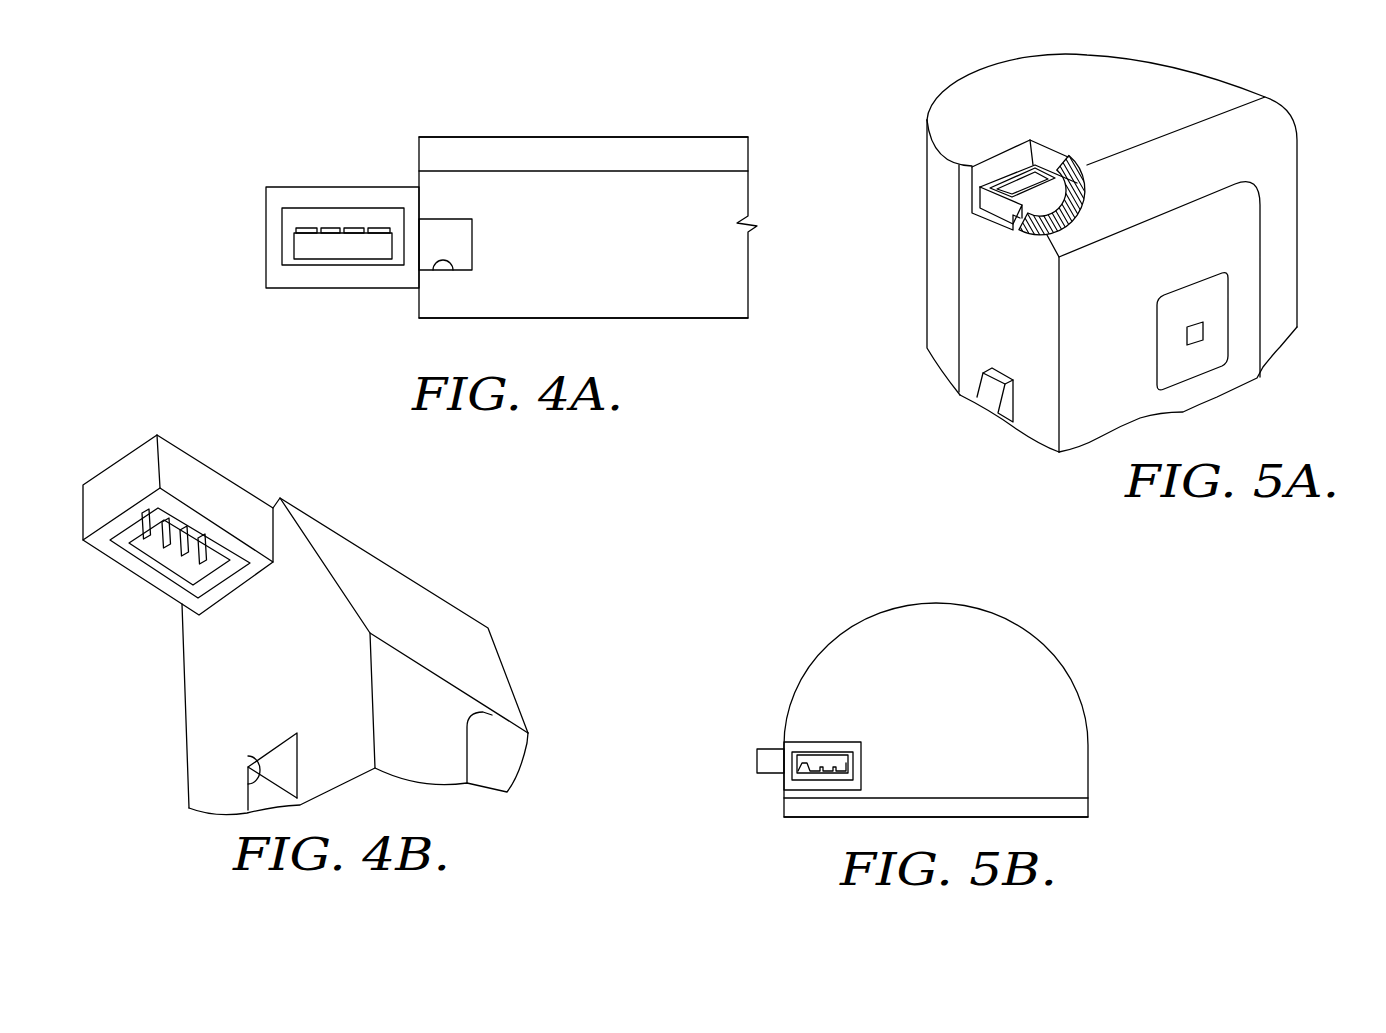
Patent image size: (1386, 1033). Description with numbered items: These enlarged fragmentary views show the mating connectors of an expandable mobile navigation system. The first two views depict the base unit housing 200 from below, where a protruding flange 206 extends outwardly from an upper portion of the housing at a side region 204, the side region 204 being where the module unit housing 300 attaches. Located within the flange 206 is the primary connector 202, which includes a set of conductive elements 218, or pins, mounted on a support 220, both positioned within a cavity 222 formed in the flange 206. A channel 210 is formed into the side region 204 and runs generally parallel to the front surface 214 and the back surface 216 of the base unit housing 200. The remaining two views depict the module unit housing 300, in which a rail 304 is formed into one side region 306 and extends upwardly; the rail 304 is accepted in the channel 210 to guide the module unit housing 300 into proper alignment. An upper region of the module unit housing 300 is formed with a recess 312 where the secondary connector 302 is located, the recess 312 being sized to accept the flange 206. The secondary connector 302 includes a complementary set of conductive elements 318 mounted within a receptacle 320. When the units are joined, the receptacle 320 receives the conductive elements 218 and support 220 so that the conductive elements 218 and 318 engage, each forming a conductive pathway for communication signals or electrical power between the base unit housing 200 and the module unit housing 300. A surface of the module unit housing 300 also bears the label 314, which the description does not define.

In FIG. 4A, the base unit housing 200 is at (562, 115).
In FIG. 4B, the base unit housing 200 is at (446, 596).
In FIG. 4A, the primary connector 202 is at (320, 265).
In FIG. 4B, the side region 204 is at (308, 597).
In FIG. 4A, the protruding flange 206 is at (370, 187).
In FIG. 4B, the protruding flange 206 is at (120, 452).
In FIG. 4A, the channel 210 is at (448, 260).
In FIG. 4B, the channel 210 is at (267, 760).
In FIG. 4A, the front surface 214 is at (692, 318).
In FIG. 4B, the front surface 214 is at (450, 707).
In FIG. 4A, the back surface 216 is at (690, 137).
In FIG. 4A, the conductive elements 218 is at (302, 228).
In FIG. 4B, the conductive elements 218 is at (173, 522).
In FIG. 4A, the support 220 is at (368, 259).
In FIG. 4B, the support 220 is at (185, 570).
In FIG. 4B, the cavity 222 is at (133, 562).
In FIG. 5A, the module unit housing 300 is at (1293, 88).
In FIG. 5B, the module unit housing 300 is at (1055, 622).
In FIG. 5A, the secondary connector 302 is at (1050, 164).
In FIG. 5B, the secondary connector 302 is at (820, 747).
In FIG. 5A, the rail 304 is at (987, 398).
In FIG. 5B, the rail 304 is at (757, 757).
In FIG. 5A, the side region 306 is at (968, 300).
In FIG. 5A, the recess 312 is at (1003, 141).
In FIG. 5B, the recess 312 is at (855, 742).
In FIG. 5A, the front panel 314 is at (1247, 247).
In FIG. 5B, the front panel 314 is at (1078, 822).
In FIG. 5B, the conductive elements 318 is at (797, 770).
In FIG. 5B, the receptacle 320 is at (842, 762).